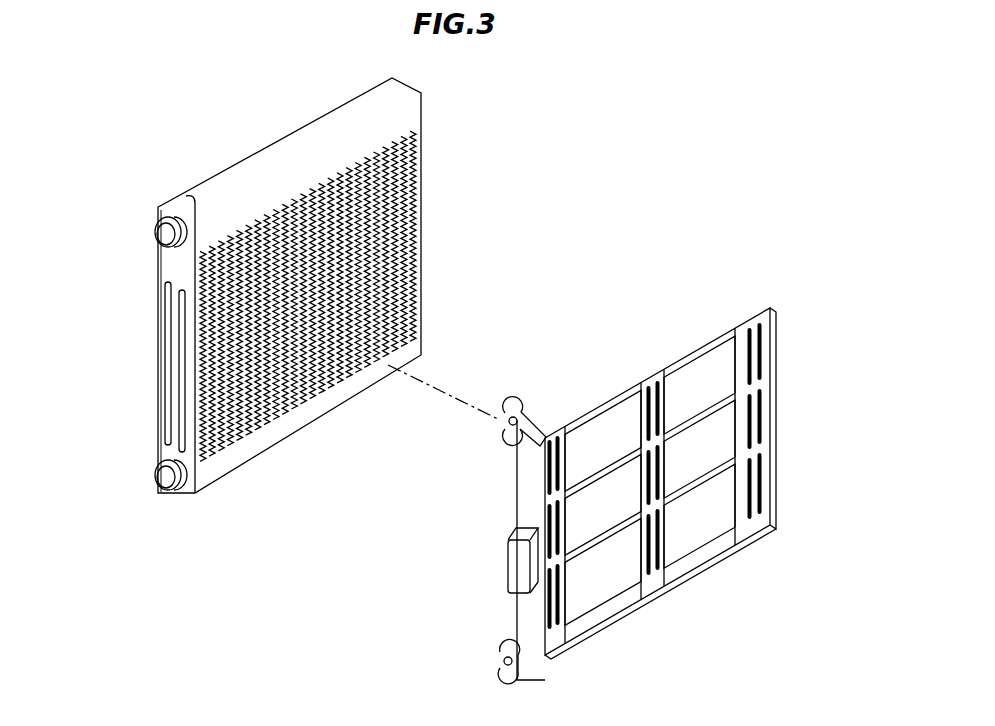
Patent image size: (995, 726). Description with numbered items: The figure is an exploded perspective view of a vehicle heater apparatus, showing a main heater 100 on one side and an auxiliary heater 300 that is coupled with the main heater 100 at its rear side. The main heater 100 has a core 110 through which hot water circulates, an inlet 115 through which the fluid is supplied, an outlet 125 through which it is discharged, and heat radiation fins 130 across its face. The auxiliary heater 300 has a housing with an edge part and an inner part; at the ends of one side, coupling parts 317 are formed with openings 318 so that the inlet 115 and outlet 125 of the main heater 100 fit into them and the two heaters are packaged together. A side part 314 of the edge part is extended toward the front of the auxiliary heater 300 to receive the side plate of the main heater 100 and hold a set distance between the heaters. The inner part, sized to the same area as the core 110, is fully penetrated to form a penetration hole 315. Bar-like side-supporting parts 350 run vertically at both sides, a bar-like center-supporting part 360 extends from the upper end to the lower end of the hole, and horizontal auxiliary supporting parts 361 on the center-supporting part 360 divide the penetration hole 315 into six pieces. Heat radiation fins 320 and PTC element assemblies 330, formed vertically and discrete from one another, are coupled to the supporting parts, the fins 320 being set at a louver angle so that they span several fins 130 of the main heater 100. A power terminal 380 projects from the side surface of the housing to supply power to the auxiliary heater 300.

The main heater 100 is at (247, 136).
The core 110 is at (196, 358).
The inlet 115 is at (166, 234).
The outlet 125 is at (162, 487).
The heat radiation fins 130 is at (222, 452).
The auxiliary heater 300 is at (722, 283).
The side part 314 is at (533, 640).
The penetration hole 315 is at (708, 446).
The coupling parts 317 is at (522, 385).
The openings 318 is at (504, 428).
The heat radiation fins 320 is at (752, 525).
The PTC element assemblies 330 is at (762, 494).
The side-supporting parts 350 is at (762, 363).
The center-supporting part 360 is at (652, 395).
The auxiliary supporting parts 361 is at (703, 413).
The power terminal 380 is at (512, 562).